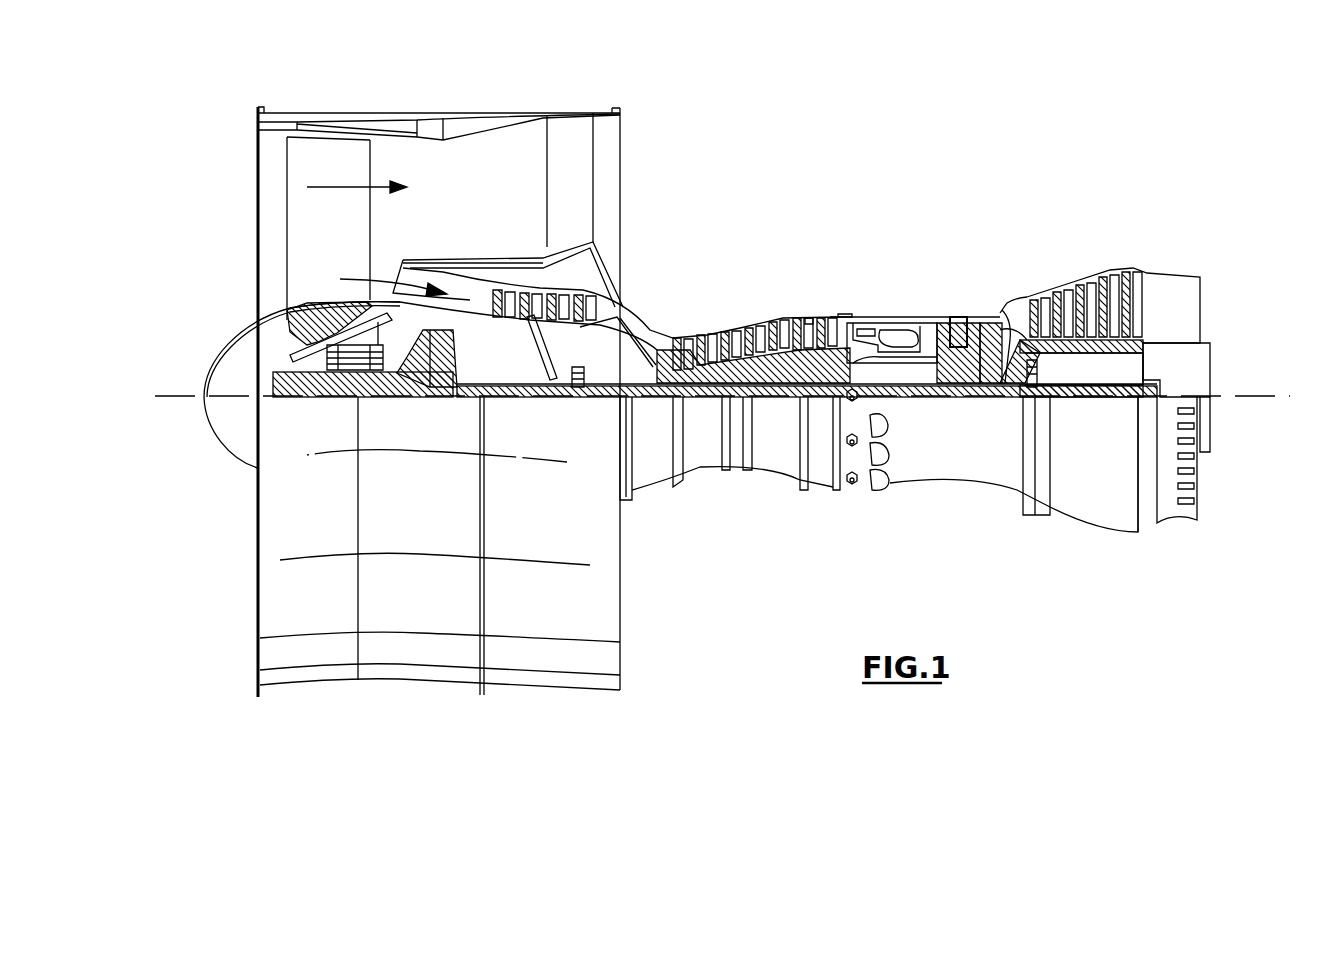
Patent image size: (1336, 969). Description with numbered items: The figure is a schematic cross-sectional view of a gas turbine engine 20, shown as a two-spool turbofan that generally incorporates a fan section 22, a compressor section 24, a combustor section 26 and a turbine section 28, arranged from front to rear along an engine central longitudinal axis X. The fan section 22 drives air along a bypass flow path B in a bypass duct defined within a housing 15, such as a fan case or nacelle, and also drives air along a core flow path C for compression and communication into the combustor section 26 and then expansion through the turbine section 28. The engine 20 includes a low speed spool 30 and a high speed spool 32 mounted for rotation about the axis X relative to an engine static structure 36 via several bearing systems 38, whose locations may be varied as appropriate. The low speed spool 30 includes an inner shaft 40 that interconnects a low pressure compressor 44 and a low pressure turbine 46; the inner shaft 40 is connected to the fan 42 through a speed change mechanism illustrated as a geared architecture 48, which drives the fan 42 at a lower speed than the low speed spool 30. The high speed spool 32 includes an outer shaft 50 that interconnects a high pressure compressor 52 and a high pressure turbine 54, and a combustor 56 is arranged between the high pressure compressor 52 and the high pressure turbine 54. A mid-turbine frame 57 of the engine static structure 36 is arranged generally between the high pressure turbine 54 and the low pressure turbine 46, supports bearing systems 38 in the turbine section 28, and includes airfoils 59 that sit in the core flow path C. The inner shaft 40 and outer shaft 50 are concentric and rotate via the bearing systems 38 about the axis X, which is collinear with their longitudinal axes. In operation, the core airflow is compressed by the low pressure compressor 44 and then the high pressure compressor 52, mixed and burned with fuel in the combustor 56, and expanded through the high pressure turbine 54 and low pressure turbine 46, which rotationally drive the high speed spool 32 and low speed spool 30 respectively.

The gas turbine engine 20 is at (900, 162).
The fan section 22 is at (368, 108).
The housing 15 is at (437, 116).
The compressor section 24 is at (667, 308).
The combustor section 26 is at (893, 298).
The turbine section 28 is at (1042, 258).
The low speed spool 30 is at (780, 399).
The high speed spool 32 is at (814, 367).
The engine static structure 36 is at (820, 484).
The bearing systems 38 is at (577, 380).
The inner shaft 40 is at (638, 397).
The fan 42 is at (343, 243).
The low pressure compressor 44 is at (553, 297).
The low pressure turbine 46 is at (1087, 280).
The geared architecture 48 is at (443, 380).
The outer shaft 50 is at (915, 365).
The high pressure compressor 52 is at (766, 355).
The high pressure turbine 54 is at (957, 323).
The combustor 56 is at (893, 337).
The mid-turbine frame 57 is at (1000, 307).
The airfoils 59 is at (1030, 360).
The bypass flow path B is at (343, 187).
The core flow path C is at (384, 280).
The engine central longitudinal axis X is at (1283, 396).